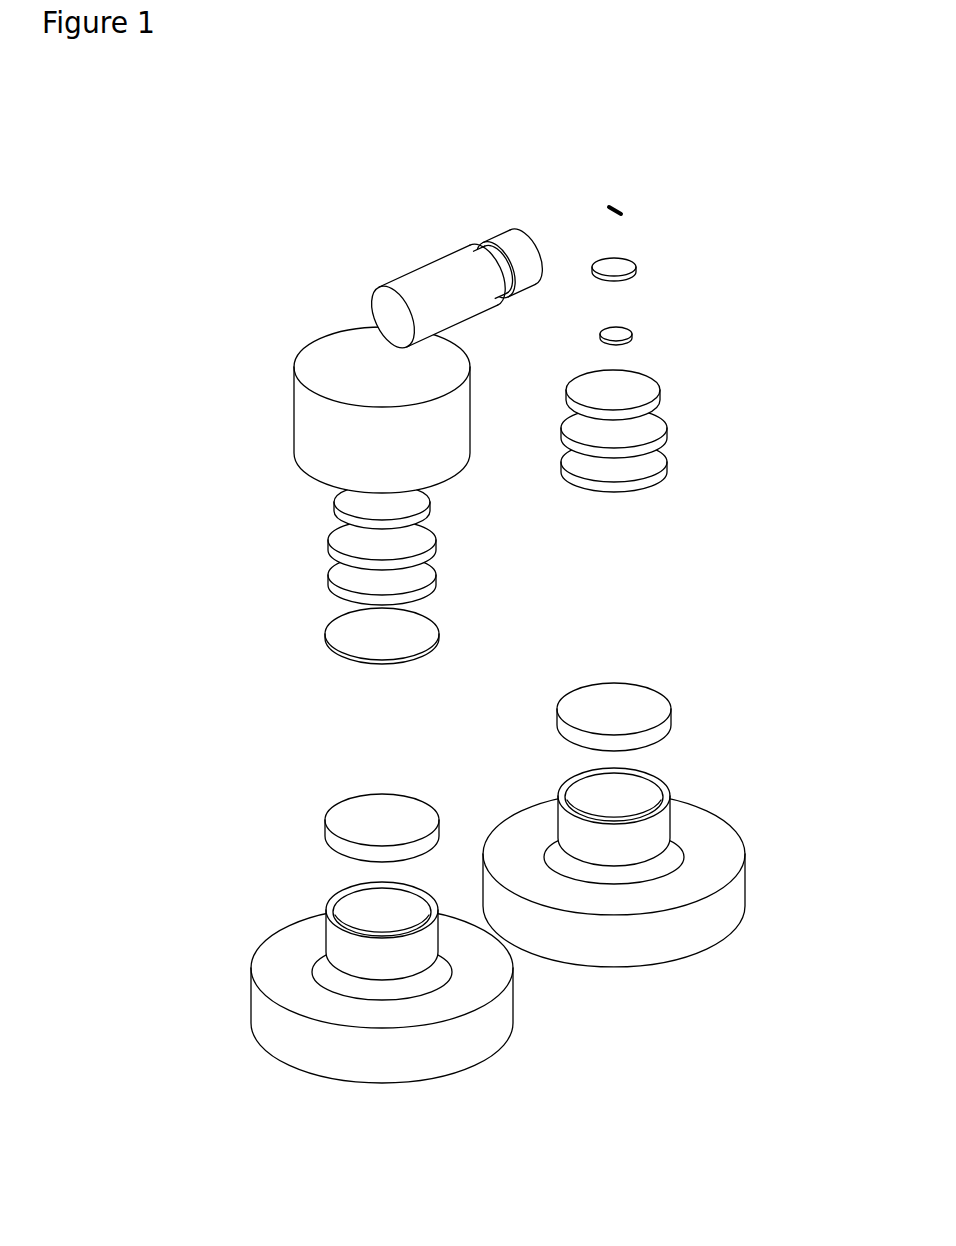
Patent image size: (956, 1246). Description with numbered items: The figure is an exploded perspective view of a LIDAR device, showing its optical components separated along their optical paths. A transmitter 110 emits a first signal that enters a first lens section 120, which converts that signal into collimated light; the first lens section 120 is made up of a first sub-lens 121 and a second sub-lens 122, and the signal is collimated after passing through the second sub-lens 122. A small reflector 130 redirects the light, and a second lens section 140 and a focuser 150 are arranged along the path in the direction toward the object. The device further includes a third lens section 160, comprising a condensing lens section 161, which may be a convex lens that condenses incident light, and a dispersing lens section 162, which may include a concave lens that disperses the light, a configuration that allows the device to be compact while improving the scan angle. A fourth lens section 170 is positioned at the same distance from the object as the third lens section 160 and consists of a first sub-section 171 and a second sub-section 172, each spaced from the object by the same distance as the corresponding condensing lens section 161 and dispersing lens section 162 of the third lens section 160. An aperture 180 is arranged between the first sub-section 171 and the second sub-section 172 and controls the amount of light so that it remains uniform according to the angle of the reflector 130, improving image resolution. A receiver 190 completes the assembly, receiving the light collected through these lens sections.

The transmitter 110 is at (432, 275).
The first lens section 120 is at (499, 218).
The 1-1 lens 121 is at (485, 241).
The 1-2 lens 122 is at (537, 233).
The reflector 130 is at (618, 207).
The second lens section 140 is at (635, 266).
The focuser 150 is at (628, 332).
The third lens section 160 is at (658, 668).
The 3-1 lens section 161 is at (647, 431).
The 3-2 lens section 162 is at (756, 703).
The fourth lens section 170 is at (338, 783).
The 4-1 lens section 171 is at (350, 544).
The 4-2 lens section 172 is at (245, 812).
The aperture 180 is at (423, 632).
The receiver 190 is at (310, 417).